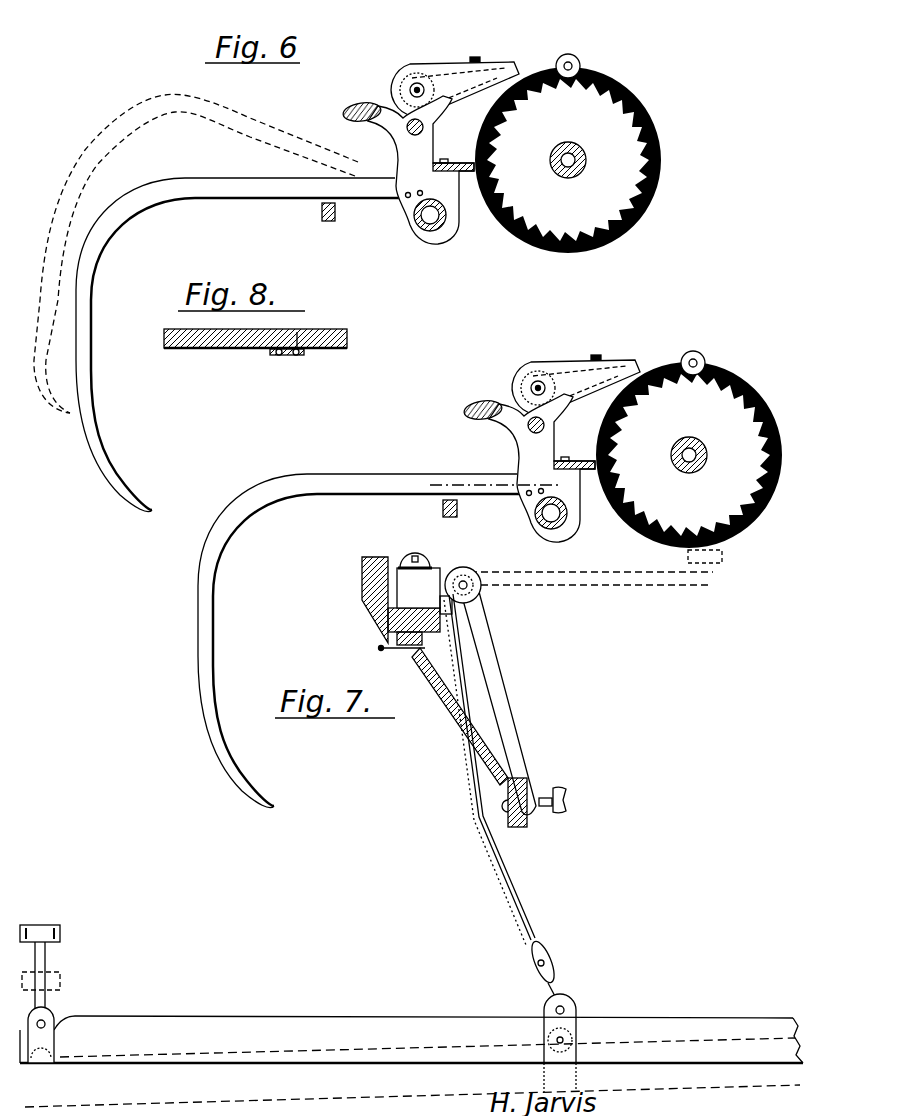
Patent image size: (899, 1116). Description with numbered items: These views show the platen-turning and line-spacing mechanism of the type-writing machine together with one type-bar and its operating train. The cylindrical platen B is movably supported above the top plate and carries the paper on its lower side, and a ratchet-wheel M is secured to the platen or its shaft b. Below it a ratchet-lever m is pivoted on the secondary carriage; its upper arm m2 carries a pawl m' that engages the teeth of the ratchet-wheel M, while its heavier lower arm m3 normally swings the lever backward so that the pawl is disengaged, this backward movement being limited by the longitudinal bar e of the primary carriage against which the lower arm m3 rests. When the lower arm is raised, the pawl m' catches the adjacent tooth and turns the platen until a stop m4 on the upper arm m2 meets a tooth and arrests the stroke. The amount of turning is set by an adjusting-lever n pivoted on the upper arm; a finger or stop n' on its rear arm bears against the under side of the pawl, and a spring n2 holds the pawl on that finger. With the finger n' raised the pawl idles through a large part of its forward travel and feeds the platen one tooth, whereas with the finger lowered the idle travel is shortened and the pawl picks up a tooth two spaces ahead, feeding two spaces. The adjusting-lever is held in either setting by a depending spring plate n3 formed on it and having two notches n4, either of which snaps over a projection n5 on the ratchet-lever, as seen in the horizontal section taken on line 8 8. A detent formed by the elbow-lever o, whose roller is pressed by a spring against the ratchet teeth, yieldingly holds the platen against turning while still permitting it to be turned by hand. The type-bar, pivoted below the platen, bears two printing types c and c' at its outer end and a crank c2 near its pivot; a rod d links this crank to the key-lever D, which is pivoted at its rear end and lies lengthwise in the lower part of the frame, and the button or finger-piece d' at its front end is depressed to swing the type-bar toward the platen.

In FIG. 6, the cylindrical platen B is at (644, 109).
In FIG. 7, the cylindrical platen B is at (760, 395).
In FIG. 6, the hub of ratchet wheel b is at (587, 160).
In FIG. 7, the hub of ratchet wheel b is at (708, 456).
In FIG. 6, the elbow-lever o is at (568, 55).
In FIG. 7, the elbow-lever o is at (693, 352).
In FIG. 6, the ratchet-wheel M is at (571, 221).
In FIG. 7, the ratchet-wheel M is at (701, 511).
In FIG. 6, the ratchet-lever m is at (433, 225).
In FIG. 8, the ratchet-lever m is at (268, 341).
In FIG. 7, the ratchet-lever m is at (558, 522).
In FIG. 6, the pawl m' is at (455, 70).
In FIG. 7, the pawl m' is at (576, 378).
In FIG. 6, the upper arm of the ratchet-lever m2 is at (398, 153).
In FIG. 7, the upper arm of the ratchet-lever m2 is at (519, 452).
In FIG. 6, the lower arm of the ratchet-lever m3 is at (238, 331).
In FIG. 7, the lower arm of the ratchet-lever m3 is at (362, 628).
In FIG. 6, the stop m4 is at (462, 172).
In FIG. 7, the stop m4 is at (582, 472).
In FIG. 6, the adjusting-lever n is at (408, 170).
In FIG. 7, the adjusting-lever n is at (529, 468).
In FIG. 6, the finger or stop n' is at (467, 94).
In FIG. 7, the finger or stop n' is at (589, 395).
In FIG. 6, the spring n2 is at (410, 72).
In FIG. 7, the spring n2 is at (531, 368).
In FIG. 6, the depending spring plate or lug n3 is at (415, 164).
In FIG. 8, the depending spring plate or lug n3 is at (289, 356).
In FIG. 7, the depending spring plate or lug n3 is at (528, 462).
In FIG. 8, the notches or recesses n4 is at (276, 355).
In FIG. 8, the projection n5 is at (300, 346).
In FIG. 6, the longitudinal bar of the primary carriage e is at (320, 216).
In FIG. 7, the longitudinal bar of the primary carriage e is at (442, 510).
In FIG. 7, the section line 8 is at (502, 485).
In FIG. 7, the printing type c is at (519, 707).
In FIG. 7, the printing type c' is at (586, 807).
In FIG. 7, the crank c2 is at (462, 567).
In FIG. 7, the rod d is at (510, 843).
In FIG. 7, the button or finger-piece d' is at (42, 994).
In FIG. 7, the key-lever D is at (411, 1046).